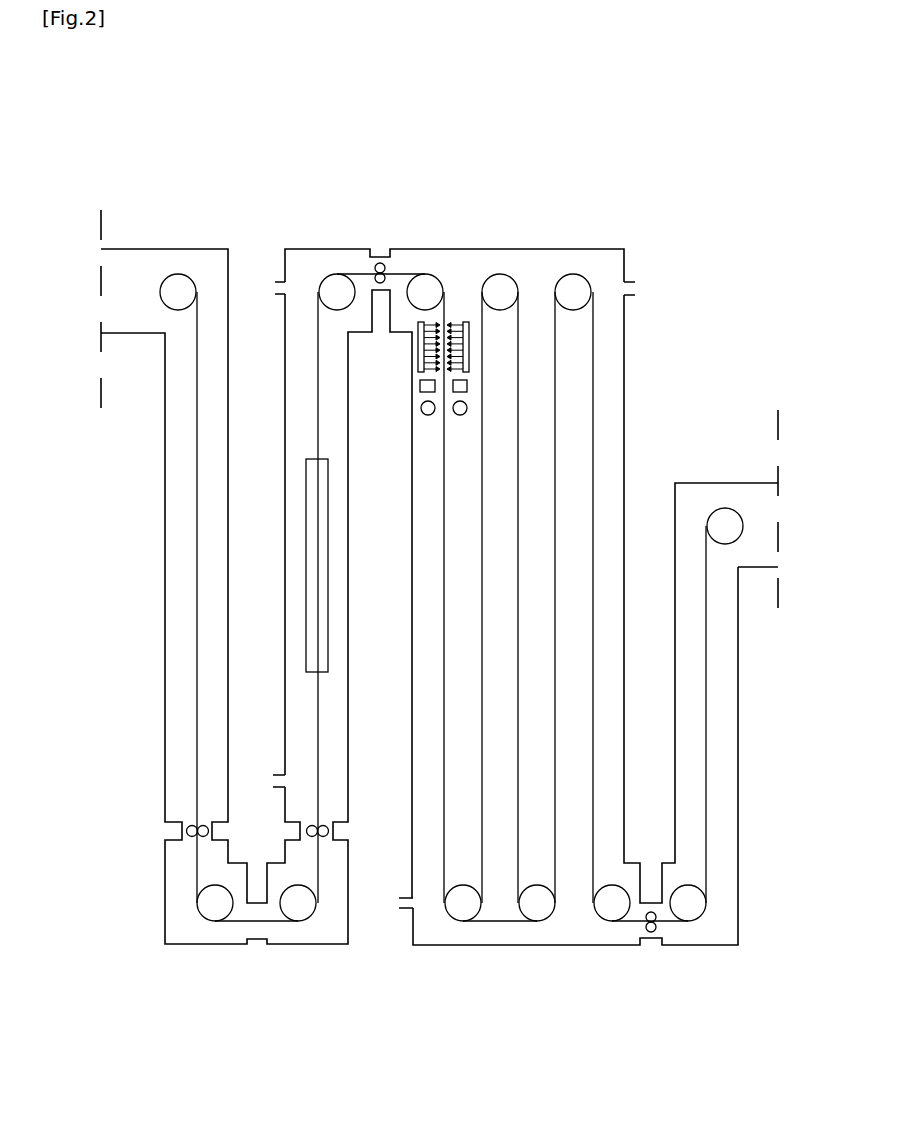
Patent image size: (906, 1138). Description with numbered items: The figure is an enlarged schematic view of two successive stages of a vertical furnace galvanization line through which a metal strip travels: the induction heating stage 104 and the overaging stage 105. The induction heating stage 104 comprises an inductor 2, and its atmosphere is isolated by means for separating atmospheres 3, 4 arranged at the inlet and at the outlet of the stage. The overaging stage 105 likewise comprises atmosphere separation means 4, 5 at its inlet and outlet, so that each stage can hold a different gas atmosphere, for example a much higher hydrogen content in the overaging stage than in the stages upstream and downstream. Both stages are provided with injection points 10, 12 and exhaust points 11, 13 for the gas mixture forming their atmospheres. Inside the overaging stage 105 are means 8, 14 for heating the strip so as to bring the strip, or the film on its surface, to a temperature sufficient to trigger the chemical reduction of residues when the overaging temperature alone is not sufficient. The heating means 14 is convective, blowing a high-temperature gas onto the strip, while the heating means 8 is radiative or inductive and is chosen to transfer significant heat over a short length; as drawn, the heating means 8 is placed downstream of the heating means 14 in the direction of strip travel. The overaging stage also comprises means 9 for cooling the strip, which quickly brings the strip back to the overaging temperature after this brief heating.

The inductor 2 is at (306, 565).
The means for separating atmospheres 3 is at (320, 833).
The means for separating atmospheres 4 is at (380, 262).
The atmosphere separation means 5 is at (651, 932).
The heating means 8 is at (420, 387).
The means for cooling the strip 9 is at (418, 411).
The injection point 10 is at (399, 908).
The exhaust point 11 is at (635, 282).
The injection point 12 is at (273, 775).
The exhaust point 13 is at (275, 282).
The heating means 14 is at (462, 283).
The induction heating stage 104 is at (303, 182).
The overaging stage 105 is at (530, 183).